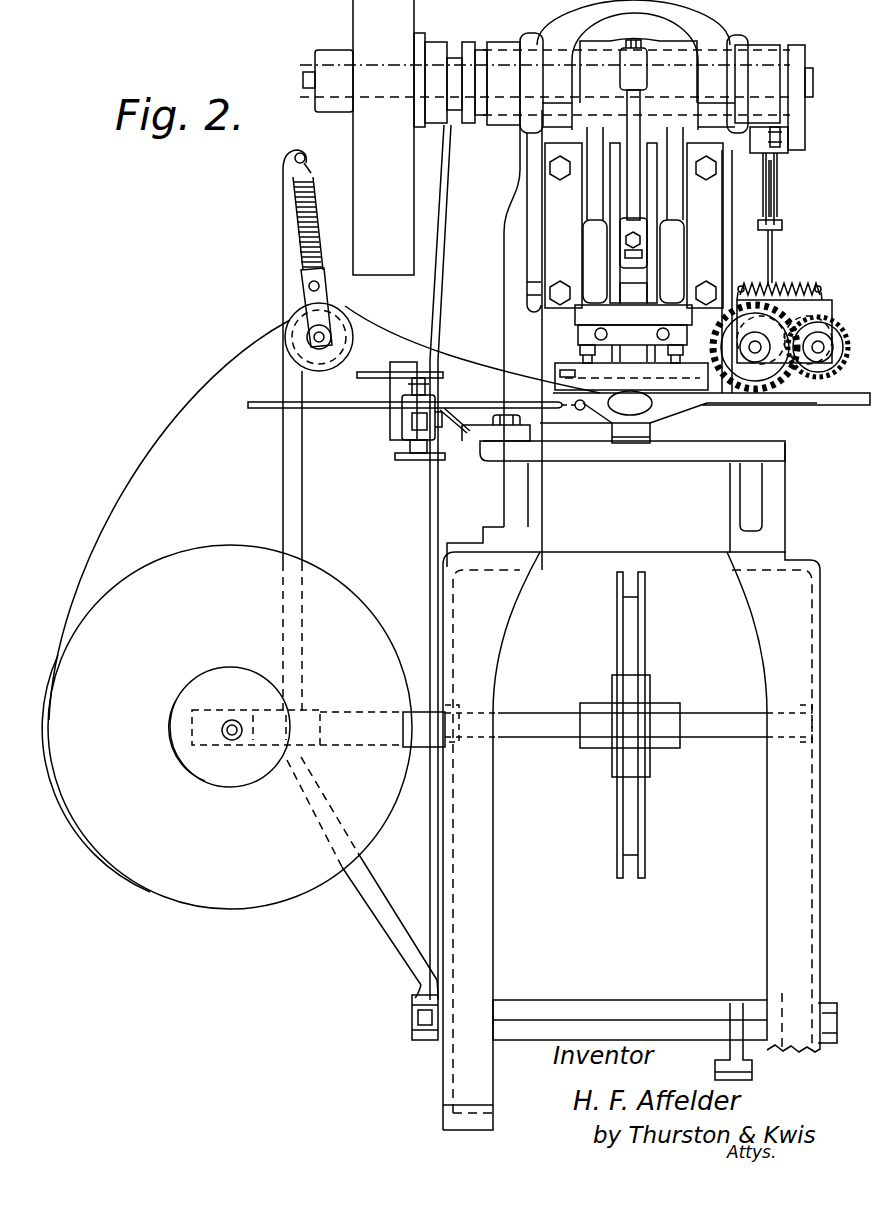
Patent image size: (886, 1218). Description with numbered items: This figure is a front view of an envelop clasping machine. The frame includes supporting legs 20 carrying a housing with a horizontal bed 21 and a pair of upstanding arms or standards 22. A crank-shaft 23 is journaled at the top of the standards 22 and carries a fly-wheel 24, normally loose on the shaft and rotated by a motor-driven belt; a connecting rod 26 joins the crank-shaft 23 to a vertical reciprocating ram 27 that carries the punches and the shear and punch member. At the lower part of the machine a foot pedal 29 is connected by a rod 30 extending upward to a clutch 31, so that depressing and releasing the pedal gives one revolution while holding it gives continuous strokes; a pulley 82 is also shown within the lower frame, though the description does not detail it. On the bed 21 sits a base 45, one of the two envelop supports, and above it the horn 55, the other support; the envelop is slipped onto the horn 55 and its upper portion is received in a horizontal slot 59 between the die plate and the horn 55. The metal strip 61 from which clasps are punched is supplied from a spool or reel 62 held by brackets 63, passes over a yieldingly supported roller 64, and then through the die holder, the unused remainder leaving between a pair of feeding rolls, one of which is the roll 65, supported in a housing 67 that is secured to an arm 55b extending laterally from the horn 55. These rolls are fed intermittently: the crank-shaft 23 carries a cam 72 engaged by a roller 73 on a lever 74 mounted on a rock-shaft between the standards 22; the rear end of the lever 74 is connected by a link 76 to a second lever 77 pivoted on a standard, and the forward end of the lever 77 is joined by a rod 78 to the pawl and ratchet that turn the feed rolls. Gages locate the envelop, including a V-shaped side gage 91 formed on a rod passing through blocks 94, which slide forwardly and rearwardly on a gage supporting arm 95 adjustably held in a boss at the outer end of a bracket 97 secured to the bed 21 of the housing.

The supporting legs 20 is at (640, 841).
The horizontal bed 21 is at (598, 464).
The upstanding arms or standards 22 is at (740, 248).
The crank-shaft 23 is at (800, 104).
The fly-wheel 24 is at (353, 19).
The connecting rod 26 is at (634, 225).
The vertical reciprocating ram 27 is at (672, 190).
The foot pedal 29 is at (752, 1068).
The rod 30 is at (429, 879).
The clutch 31 is at (455, 60).
The base 45 is at (638, 445).
The horn 55 is at (645, 410).
The arm 55b is at (826, 410).
The horizontal slot 59 is at (652, 397).
The metal strip 61 is at (122, 468).
The spool or reel 62 is at (200, 548).
The brackets 63 is at (418, 742).
The yieldingly supported roller 64 is at (290, 350).
The feeding roll 65 is at (824, 367).
The housing 67 is at (784, 332).
The cam 72 is at (790, 140).
The roller 73 is at (782, 152).
The lever 74 is at (774, 165).
The link 76 is at (763, 187).
The second lever 77 is at (782, 225).
The rod 78 is at (778, 256).
The pulley 82 is at (645, 640).
The V-shaped side gage 91 is at (462, 400).
The blocks 94 is at (405, 424).
The gage supporting arm 95 is at (420, 438).
The bracket 97 is at (478, 450).